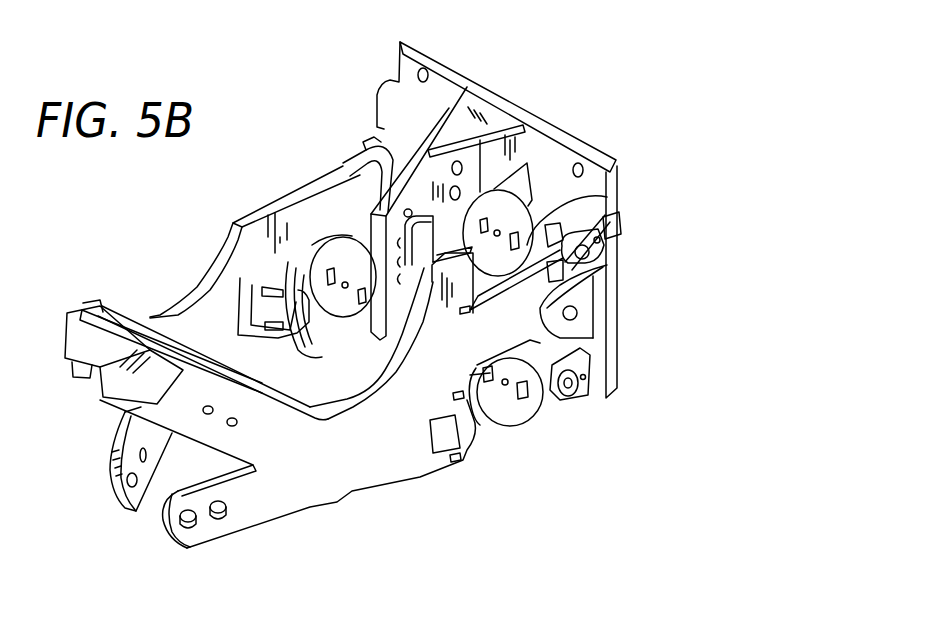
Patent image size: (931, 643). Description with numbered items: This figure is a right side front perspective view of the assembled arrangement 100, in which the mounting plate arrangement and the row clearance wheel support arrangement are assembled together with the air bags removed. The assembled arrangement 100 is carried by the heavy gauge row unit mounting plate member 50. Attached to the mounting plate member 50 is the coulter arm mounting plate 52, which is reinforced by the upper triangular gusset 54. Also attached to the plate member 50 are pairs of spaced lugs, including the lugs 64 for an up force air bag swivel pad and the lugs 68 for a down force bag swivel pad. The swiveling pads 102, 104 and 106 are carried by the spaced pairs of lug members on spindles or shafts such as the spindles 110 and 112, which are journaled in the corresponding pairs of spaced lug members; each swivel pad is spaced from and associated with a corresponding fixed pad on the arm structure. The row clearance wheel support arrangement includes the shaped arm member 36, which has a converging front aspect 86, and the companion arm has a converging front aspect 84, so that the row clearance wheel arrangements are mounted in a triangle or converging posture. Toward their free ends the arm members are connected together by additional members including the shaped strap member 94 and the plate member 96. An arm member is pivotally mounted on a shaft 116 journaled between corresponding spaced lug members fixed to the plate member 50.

The assembled arrangement 100 is at (263, 165).
The shaped arm member 36 is at (393, 465).
The row unit mounting plate member 50 is at (540, 123).
The coulter arm mounting plate 52 is at (449, 108).
The upper triangular gusset 54 is at (480, 110).
The pair of spaced lugs 64 is at (382, 160).
The pair of spaced lugs 68 is at (528, 163).
The converging front aspect 84 is at (108, 460).
The converging front aspect 86 is at (247, 513).
The shaped strap member 94 is at (80, 338).
The plate member 96 is at (107, 318).
The swiveling pad 102 is at (516, 417).
The swiveling pad 104 is at (347, 313).
The swiveling pad 106 is at (492, 258).
The spindle or shaft 110 is at (573, 397).
The spindle or shaft 112 is at (607, 197).
The shaft 116 is at (578, 313).